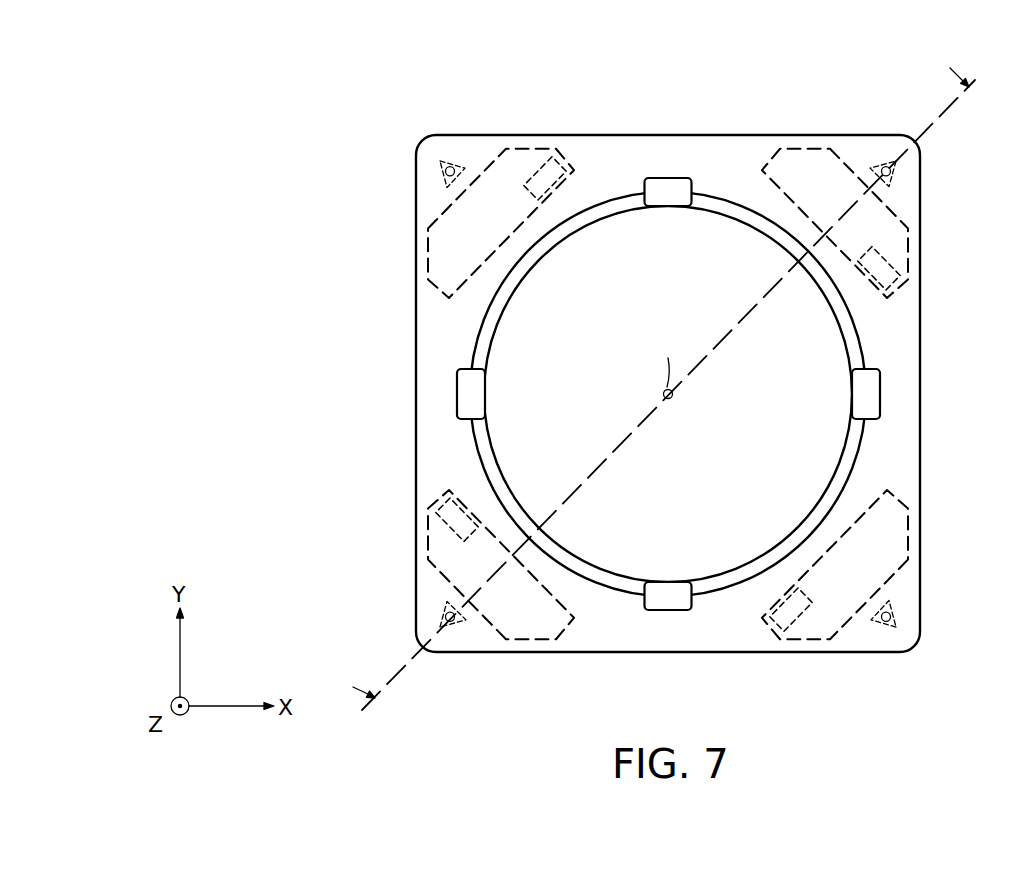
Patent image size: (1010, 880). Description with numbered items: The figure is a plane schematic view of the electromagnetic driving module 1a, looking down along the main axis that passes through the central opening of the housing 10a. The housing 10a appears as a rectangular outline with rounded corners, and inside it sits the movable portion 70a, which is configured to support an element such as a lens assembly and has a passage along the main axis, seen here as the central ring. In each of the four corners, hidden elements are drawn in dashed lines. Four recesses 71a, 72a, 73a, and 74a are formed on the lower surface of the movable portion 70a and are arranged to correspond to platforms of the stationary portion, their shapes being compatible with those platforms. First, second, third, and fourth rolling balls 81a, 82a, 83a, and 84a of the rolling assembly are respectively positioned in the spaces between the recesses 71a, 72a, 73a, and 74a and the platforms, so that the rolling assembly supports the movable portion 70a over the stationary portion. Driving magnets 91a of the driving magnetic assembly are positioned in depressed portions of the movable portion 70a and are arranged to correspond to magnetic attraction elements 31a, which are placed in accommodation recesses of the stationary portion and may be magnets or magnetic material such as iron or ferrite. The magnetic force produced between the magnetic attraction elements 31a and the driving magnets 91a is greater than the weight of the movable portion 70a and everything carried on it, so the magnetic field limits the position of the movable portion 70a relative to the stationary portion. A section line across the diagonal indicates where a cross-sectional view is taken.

The electromagnetic driving module 1a is at (662, 382).
The housing 10a is at (921, 391).
The movable portion 70a is at (852, 333).
The driving magnet 91a is at (807, 158).
The magnetic attraction element 31a is at (882, 264).
The recess 71a is at (445, 172).
The recess 72a is at (886, 162).
The recess 73a is at (893, 617).
The recess 74a is at (452, 625).
The first rolling ball 81a is at (448, 165).
The second rolling ball 82a is at (890, 172).
The third rolling ball 83a is at (888, 625).
The fourth rolling ball 84a is at (448, 617).